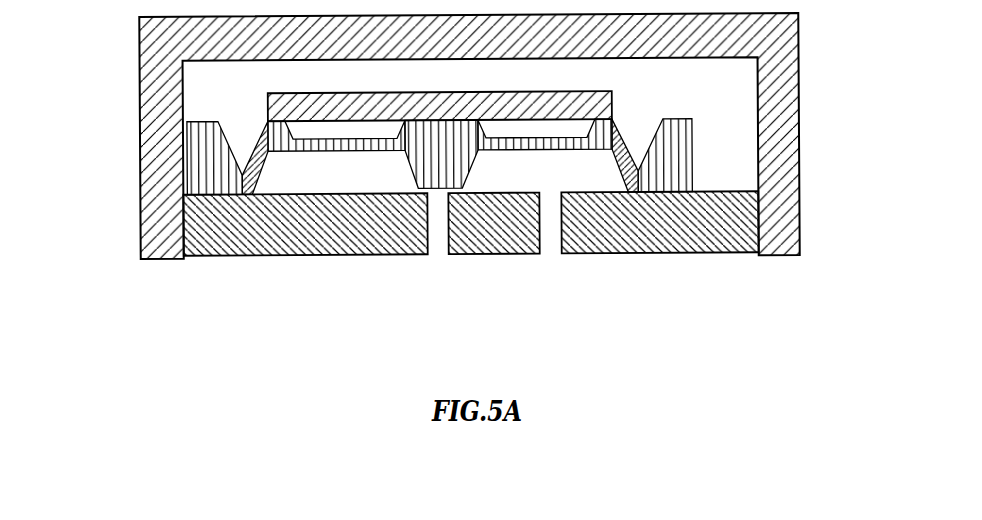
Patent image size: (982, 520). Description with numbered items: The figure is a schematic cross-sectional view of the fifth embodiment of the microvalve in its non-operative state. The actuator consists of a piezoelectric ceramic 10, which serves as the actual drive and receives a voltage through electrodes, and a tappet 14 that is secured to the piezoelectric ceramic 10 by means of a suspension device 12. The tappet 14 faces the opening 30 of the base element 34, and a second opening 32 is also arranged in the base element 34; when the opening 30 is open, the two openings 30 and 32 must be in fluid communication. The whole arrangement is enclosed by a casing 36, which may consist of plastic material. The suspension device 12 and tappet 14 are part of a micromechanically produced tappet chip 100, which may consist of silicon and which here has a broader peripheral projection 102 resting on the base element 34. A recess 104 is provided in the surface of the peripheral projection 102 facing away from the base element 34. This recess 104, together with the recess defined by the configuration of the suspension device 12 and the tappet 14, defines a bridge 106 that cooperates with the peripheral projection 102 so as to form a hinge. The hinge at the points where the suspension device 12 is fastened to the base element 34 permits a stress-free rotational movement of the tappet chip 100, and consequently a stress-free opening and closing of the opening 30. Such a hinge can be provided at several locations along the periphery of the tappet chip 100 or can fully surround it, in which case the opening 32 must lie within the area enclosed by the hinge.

The piezoelectric ceramic 10 is at (614, 109).
The suspension device 12 is at (500, 150).
The tappet 14 is at (410, 167).
The opening 30 is at (437, 257).
The opening 32 is at (548, 257).
The base element 34 is at (760, 218).
The casing 36 is at (785, 37).
The tappet chip 100 is at (694, 154).
The peripheral projection 102 is at (187, 155).
The recess 104 is at (226, 152).
The bridge 106 is at (256, 166).